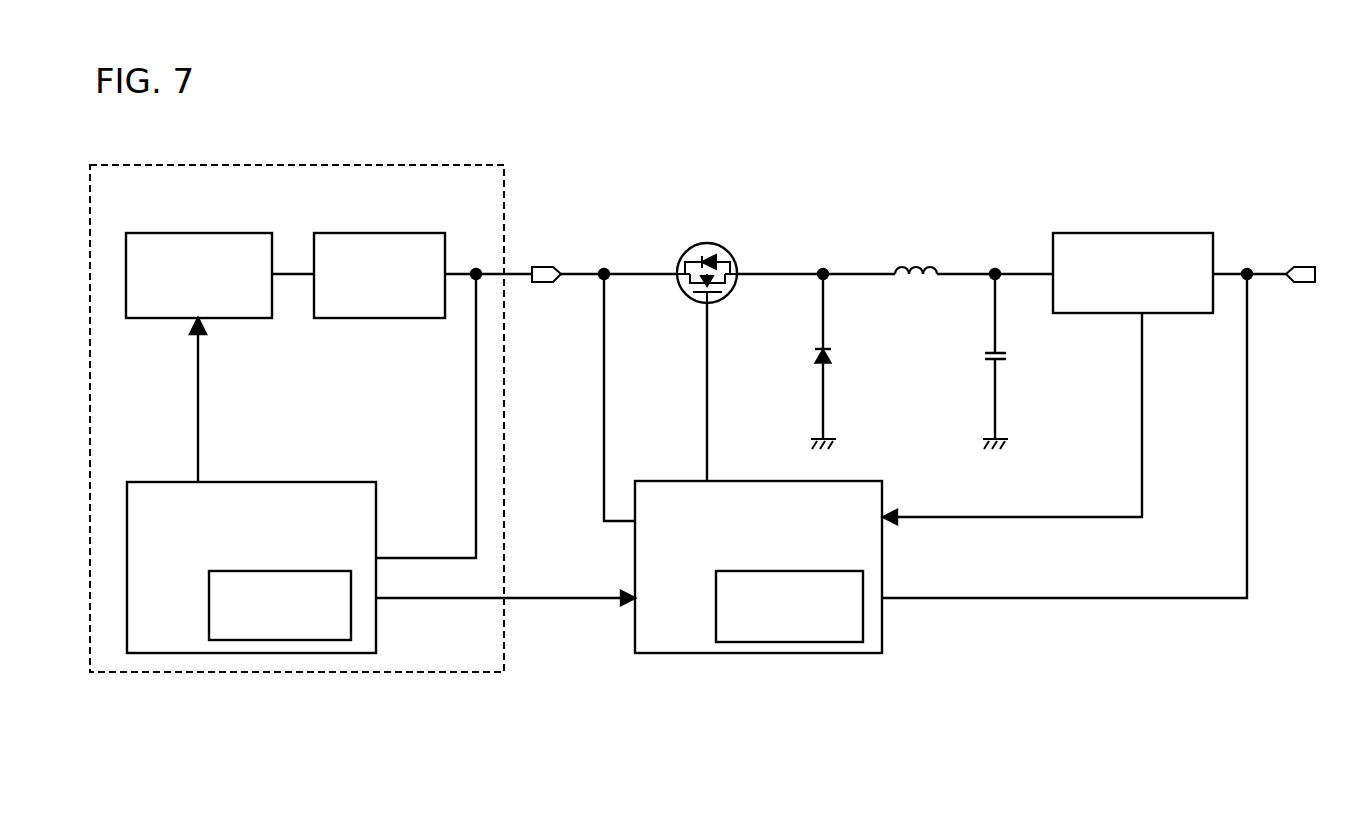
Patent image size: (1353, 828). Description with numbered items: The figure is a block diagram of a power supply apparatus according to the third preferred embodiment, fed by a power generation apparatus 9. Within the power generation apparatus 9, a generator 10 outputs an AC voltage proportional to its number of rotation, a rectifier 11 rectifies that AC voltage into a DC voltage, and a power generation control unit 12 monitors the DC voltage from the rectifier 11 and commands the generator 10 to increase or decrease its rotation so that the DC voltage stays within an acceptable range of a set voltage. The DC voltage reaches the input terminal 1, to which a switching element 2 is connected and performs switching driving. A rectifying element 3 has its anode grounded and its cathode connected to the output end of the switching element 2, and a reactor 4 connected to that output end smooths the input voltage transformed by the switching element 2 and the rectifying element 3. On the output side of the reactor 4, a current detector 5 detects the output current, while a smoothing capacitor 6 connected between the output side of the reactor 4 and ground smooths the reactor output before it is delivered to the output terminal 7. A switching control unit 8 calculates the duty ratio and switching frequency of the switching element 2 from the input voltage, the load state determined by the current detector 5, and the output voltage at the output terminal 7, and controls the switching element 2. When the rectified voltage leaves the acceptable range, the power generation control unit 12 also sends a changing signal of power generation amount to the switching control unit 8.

The input terminal 1 is at (555, 267).
The switching element 2 is at (727, 248).
The rectifying element 3 is at (840, 355).
The reactor 4 is at (923, 260).
The current detector 5 is at (1127, 233).
The smoothing capacitor 6 is at (1010, 350).
The output terminal 7 is at (1292, 267).
The switching control unit 8 is at (675, 481).
The power generation apparatus 9 is at (305, 165).
The generator 10 is at (205, 233).
The rectifier 11 is at (407, 233).
The power generation control unit 12 is at (163, 482).